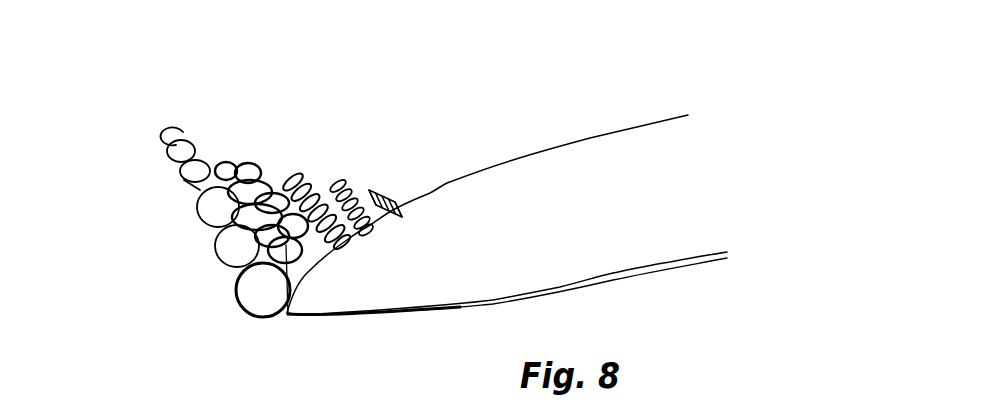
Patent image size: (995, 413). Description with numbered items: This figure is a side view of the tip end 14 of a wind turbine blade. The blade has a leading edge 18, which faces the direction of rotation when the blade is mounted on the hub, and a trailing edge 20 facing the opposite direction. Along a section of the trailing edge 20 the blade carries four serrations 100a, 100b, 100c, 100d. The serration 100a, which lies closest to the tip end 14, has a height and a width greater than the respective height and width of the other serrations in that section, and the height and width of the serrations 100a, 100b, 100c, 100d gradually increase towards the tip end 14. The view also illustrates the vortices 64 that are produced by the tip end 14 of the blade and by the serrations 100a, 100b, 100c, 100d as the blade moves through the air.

The tip end 14 is at (288, 315).
The leading edge 18 is at (492, 300).
The trailing edge 20 is at (590, 138).
The vortices 64 is at (158, 130).
The serration 100a is at (296, 258).
The serration 100b is at (338, 248).
The serration 100c is at (365, 197).
The serration 100d is at (397, 200).